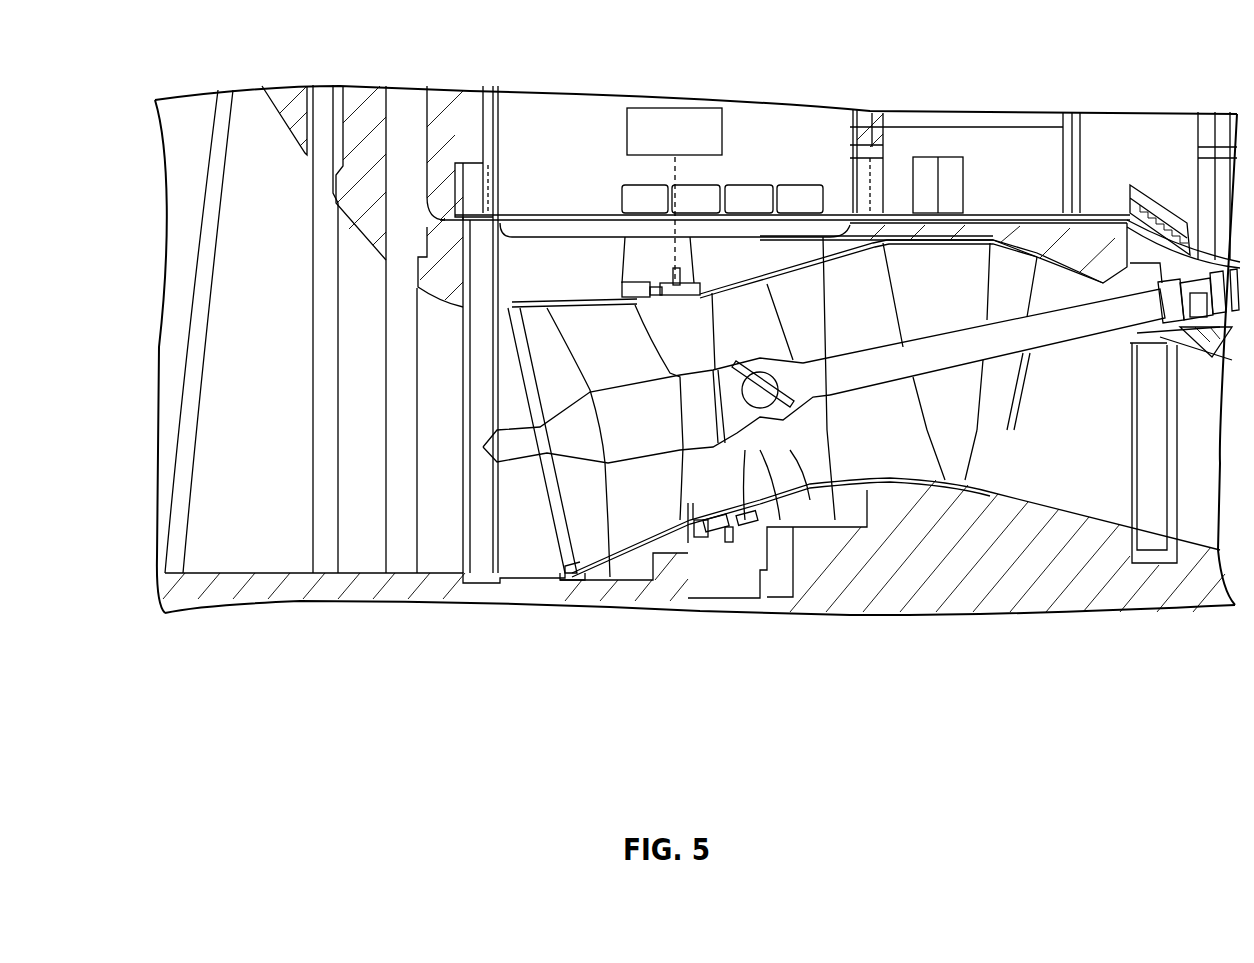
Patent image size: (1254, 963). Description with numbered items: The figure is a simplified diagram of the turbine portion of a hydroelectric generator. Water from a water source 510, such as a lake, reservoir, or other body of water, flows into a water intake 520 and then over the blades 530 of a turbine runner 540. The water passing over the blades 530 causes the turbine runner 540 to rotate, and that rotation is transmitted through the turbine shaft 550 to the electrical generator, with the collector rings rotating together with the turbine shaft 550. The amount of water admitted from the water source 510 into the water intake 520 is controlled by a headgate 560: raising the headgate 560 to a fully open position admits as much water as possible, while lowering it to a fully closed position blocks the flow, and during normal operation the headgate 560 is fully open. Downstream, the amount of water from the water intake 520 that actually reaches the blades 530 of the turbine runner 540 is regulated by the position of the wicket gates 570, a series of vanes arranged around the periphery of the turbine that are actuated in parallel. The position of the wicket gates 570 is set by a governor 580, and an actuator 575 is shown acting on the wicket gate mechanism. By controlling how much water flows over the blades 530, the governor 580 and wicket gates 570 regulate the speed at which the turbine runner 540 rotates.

The water source 510 is at (186, 201).
The water intake 520 is at (546, 503).
The blades 530 is at (757, 457).
The turbine runner 540 is at (733, 448).
The turbine shaft 550 is at (930, 360).
The headgate 560 is at (400, 530).
The wicket gates 570 is at (686, 510).
The actuator 575 is at (657, 268).
The governor 580 is at (690, 146).